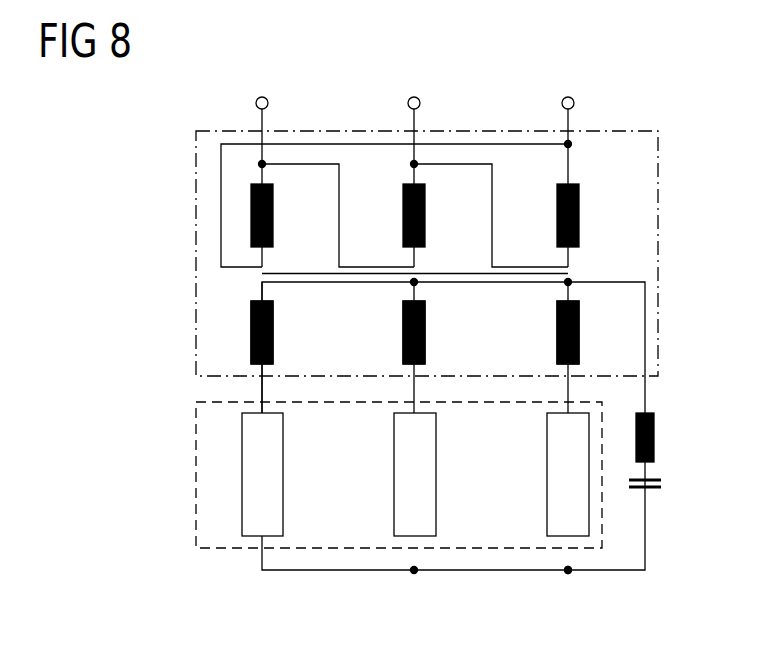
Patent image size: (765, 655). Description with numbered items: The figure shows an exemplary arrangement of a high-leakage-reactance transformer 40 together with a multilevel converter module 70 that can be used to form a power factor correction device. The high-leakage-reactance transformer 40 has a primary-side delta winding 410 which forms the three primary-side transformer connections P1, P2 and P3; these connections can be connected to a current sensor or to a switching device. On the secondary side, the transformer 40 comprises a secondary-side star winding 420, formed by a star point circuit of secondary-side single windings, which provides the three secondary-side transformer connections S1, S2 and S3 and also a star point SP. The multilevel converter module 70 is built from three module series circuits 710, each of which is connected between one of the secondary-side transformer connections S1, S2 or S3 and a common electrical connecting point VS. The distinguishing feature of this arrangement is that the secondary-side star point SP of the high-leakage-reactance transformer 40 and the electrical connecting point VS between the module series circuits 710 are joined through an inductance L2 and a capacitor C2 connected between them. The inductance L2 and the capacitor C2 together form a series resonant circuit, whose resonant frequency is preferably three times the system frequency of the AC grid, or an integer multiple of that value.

The high-leakage-reactance transformer 40 is at (196, 252).
The multilevel converter module 70 is at (196, 472).
The primary-side delta winding 410 is at (592, 210).
The secondary-side star winding 420 is at (592, 323).
The module series circuit 710 is at (283, 510).
The primary-side transformer connection P1 is at (268, 100).
The primary-side transformer connection P2 is at (420, 100).
The primary-side transformer connection P3 is at (574, 100).
The secondary-side transformer connection S1 is at (263, 375).
The secondary-side transformer connection S2 is at (415, 375).
The secondary-side transformer connection S3 is at (569, 375).
The star point SP is at (566, 283).
The inductance L2 is at (655, 437).
The capacitor C2 is at (661, 484).
The electrical connecting point VS is at (567, 571).